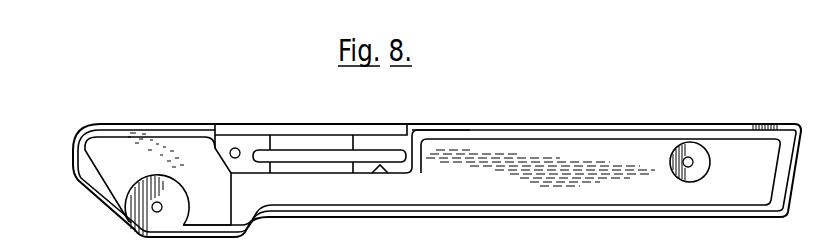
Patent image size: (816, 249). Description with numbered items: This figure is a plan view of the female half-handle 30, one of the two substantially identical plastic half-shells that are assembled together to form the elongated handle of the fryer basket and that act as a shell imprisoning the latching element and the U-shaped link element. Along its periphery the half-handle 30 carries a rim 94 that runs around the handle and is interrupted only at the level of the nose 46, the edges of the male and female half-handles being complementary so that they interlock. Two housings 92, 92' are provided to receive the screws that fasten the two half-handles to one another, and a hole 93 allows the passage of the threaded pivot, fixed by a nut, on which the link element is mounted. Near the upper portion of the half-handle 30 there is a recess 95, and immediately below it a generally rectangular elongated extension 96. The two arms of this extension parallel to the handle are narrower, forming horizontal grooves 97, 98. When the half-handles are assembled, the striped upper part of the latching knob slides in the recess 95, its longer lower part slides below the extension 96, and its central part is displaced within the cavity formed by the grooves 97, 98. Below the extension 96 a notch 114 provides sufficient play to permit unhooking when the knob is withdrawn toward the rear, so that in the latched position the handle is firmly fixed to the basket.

The female half-handle 30 is at (594, 118).
The nose 46 is at (128, 168).
The housing 92 is at (209, 157).
The housing 92' is at (709, 162).
The hole 93 is at (162, 203).
The rim 94 is at (442, 134).
The recess 95 is at (282, 128).
The extension 96 is at (265, 176).
The groove 97 is at (335, 142).
The groove 98 is at (333, 170).
The notch 114 is at (381, 175).